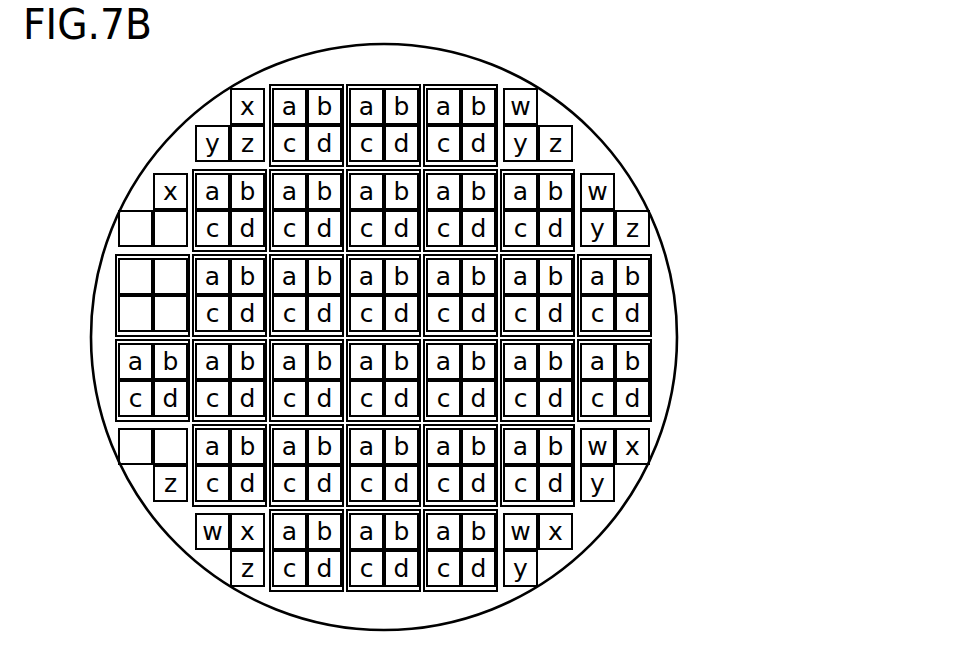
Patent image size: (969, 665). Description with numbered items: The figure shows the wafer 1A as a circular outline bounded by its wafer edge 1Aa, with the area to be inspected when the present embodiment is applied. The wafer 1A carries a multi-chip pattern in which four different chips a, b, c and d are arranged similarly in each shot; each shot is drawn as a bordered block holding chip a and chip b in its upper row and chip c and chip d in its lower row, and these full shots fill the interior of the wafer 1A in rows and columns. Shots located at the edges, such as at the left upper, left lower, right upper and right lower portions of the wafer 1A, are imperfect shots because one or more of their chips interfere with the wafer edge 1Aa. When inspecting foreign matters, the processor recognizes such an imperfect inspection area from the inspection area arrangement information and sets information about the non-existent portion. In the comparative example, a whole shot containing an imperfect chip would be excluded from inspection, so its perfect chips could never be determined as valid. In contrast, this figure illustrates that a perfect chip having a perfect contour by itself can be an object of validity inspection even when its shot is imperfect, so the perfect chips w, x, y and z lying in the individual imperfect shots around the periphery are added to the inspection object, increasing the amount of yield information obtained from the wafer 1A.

The wafer 1A is at (596, 90).
The wafer edge 1Aa is at (628, 167).
The chip a is at (135, 276).
The chip b is at (170, 276).
The chip c is at (135, 313).
The chip d is at (170, 313).
The perfect chip w is at (135, 446).
The perfect chip x is at (170, 446).
The perfect chip y is at (135, 228).
The perfect chip z is at (170, 228).